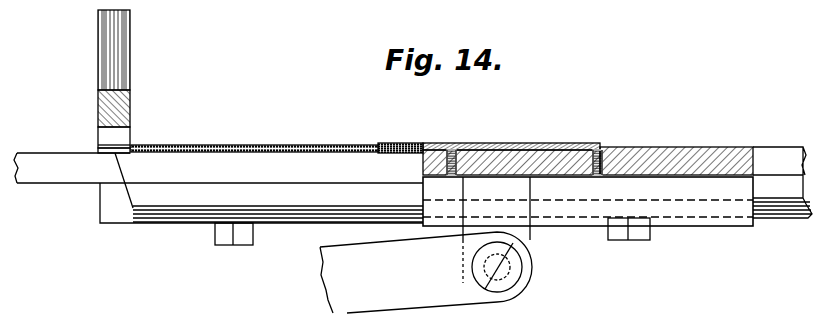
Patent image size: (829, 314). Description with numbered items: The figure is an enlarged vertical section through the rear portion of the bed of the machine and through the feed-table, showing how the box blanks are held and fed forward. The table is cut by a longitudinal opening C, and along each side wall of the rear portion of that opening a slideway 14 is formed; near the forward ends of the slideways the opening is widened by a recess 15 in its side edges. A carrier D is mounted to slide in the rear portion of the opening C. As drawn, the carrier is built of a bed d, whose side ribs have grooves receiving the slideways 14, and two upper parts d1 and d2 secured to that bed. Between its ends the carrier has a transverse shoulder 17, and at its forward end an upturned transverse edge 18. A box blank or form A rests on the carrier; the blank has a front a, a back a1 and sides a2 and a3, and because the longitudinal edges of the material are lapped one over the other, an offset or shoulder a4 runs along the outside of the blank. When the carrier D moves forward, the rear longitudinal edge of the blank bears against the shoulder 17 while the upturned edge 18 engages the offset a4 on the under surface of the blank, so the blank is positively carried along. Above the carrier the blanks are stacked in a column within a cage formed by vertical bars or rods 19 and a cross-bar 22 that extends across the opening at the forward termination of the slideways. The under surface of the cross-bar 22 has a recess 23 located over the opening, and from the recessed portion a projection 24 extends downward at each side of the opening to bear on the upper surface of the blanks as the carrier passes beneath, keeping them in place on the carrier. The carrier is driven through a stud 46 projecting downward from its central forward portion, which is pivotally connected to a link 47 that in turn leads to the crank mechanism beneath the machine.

The slideway 14 is at (202, 206).
The recess 15 is at (218, 188).
The transverse shoulder 17 is at (553, 146).
The upturned transverse edge 18 is at (392, 146).
The vertical bar or rod 19 is at (128, 58).
The cross-bar 22 is at (131, 114).
The recess 23 is at (130, 138).
The projection 24 is at (106, 151).
The stud 46 is at (588, 208).
The link 47 is at (426, 272).
The box blank or form A is at (254, 135).
The front a is at (495, 143).
The back a1 is at (322, 163).
The side a2 is at (226, 134).
The side a3 is at (399, 163).
The offset or shoulder a4 is at (380, 144).
The longitudinal opening C is at (519, 161).
The carrier D is at (588, 146).
The bed d is at (713, 173).
The upper part of carrier d1 is at (645, 148).
The upper part of carrier d2 is at (538, 150).